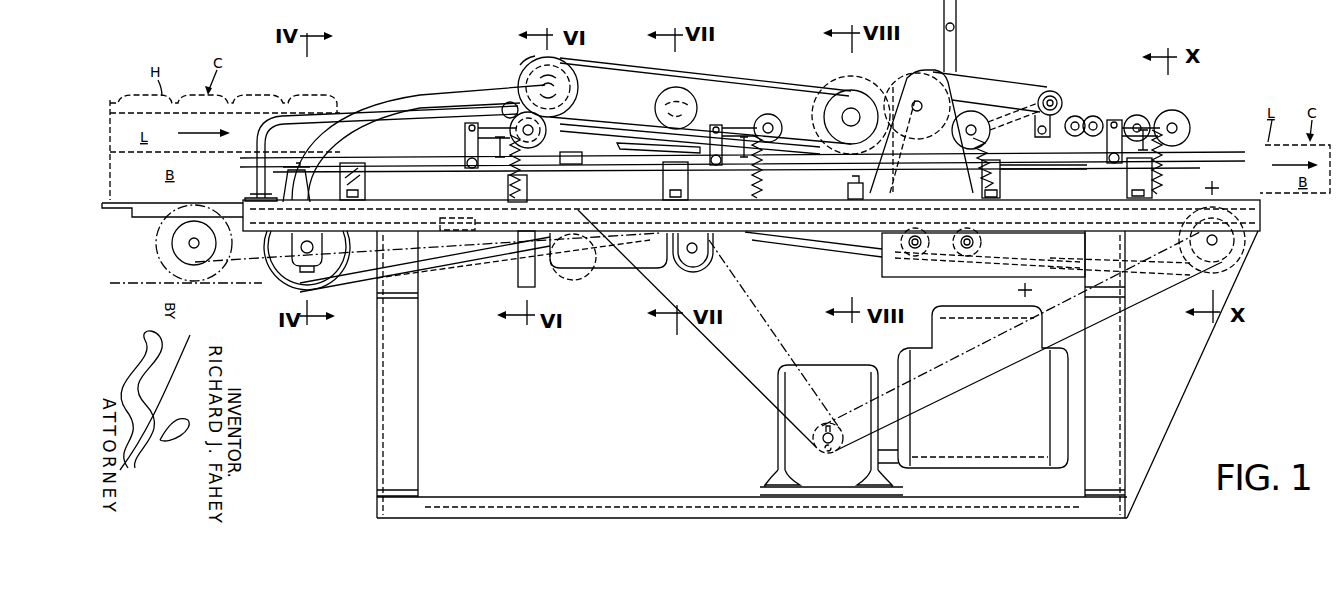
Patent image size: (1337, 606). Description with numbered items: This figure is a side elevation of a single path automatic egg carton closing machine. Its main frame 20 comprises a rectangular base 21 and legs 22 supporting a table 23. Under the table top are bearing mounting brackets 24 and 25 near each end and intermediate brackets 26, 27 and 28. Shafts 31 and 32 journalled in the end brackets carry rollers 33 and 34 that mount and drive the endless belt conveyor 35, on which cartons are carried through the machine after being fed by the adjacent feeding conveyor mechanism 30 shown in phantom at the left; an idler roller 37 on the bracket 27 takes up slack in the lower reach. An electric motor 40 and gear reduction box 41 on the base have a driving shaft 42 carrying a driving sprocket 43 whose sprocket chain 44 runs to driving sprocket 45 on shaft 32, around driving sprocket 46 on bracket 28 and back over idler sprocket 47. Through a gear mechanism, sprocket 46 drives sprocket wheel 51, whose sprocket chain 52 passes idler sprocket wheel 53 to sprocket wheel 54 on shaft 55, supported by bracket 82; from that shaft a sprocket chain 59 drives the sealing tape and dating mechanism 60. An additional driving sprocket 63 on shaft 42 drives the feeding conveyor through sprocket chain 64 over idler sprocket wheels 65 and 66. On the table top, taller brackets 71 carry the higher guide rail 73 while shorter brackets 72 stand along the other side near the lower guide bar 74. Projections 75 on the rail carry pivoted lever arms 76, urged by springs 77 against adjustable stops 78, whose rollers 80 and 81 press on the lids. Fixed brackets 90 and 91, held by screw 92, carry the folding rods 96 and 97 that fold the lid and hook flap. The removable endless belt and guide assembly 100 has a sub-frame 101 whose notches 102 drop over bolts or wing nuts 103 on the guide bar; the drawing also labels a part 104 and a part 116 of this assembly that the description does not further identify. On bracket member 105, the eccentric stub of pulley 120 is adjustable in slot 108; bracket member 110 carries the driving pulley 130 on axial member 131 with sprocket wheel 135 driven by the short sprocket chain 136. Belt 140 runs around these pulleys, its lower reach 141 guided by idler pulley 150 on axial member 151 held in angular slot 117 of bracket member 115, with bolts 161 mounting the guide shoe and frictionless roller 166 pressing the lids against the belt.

The main frame 20 is at (1210, 347).
The rectangular base 21 is at (545, 496).
The legs 22 is at (410, 385).
The table 23 is at (1262, 212).
The bearing mounting bracket 24 is at (320, 288).
The bearing mounting bracket 25 is at (1240, 268).
The bracket 26 is at (608, 265).
The bracket 27 is at (713, 247).
The bracket 28 is at (882, 265).
The feeding conveyor mechanism 30 is at (132, 282).
The shaft 31 is at (330, 252).
The shaft 32 is at (1206, 240).
The roller 33 is at (294, 278).
The roller 34 is at (1245, 242).
The endless belt conveyor 35 is at (470, 272).
The idler roller 37 is at (716, 262).
The electric motor 40 is at (983, 387).
The gear reduction box 41 is at (831, 430).
The driving shaft 42 is at (828, 446).
The driving sprocket 43 is at (838, 436).
The sprocket chain 44 is at (978, 400).
The driving sprocket 45 is at (1190, 262).
The driving sprocket 46 is at (978, 243).
The idler sprocket 47 is at (1018, 290).
The sprocket wheel 51 is at (902, 290).
The sprocket chain 52 is at (888, 216).
The idler sprocket wheel 53 is at (945, 178).
The sprocket wheel 54 is at (922, 62).
The shaft 55 is at (924, 105).
The sprocket chain 59 is at (990, 101).
The sealing tape and dating mechanism 60 is at (1054, 90).
The driving sprocket 63 is at (812, 448).
The sprocket chain 64 is at (712, 360).
The idler sprocket wheel 65 is at (576, 286).
The idler sprocket wheel 66 is at (656, 276).
The brackets 71 is at (367, 187).
The brackets 72 is at (506, 192).
The guide rail 73 is at (401, 156).
The guide bar 74 is at (1043, 168).
The projections 75 is at (465, 128).
The lever arms 76 is at (503, 104).
The springs 77 is at (507, 178).
The adjustable stops 78 is at (480, 150).
The roller 80 is at (522, 108).
The rollers 81 is at (766, 112).
The bracket 82 is at (847, 181).
The fixed bracket 90 is at (252, 181).
The fixed bracket 91 is at (316, 168).
The screw 92 is at (252, 236).
The folding rod 96 is at (341, 110).
The folding rod 97 is at (334, 134).
The removable endless belt and guide assembly 100 is at (747, 63).
The sub-frame 101 is at (736, 179).
The notches 102 is at (682, 186).
The bolts or wing nuts 103 is at (578, 172).
The bar 104 is at (716, 206).
The bracket member 105 is at (572, 122).
The slot 108 is at (535, 64).
The bracket member 110 is at (800, 125).
The bracket member 115 is at (656, 129).
The belt 116 is at (707, 72).
The angular slot 117 is at (768, 76).
The pulley 120 is at (580, 62).
The driving pulley 130 is at (803, 130).
The axial member 131 is at (838, 78).
The driving sprocket wheel 135 is at (855, 100).
The sprocket chain 136 is at (851, 117).
The belt 140 is at (792, 72).
The lower reach 141 is at (620, 100).
The idler pulley 150 is at (672, 102).
The axial member 151 is at (656, 104).
The bolts 161 is at (577, 162).
The frictionless roller 166 is at (585, 137).